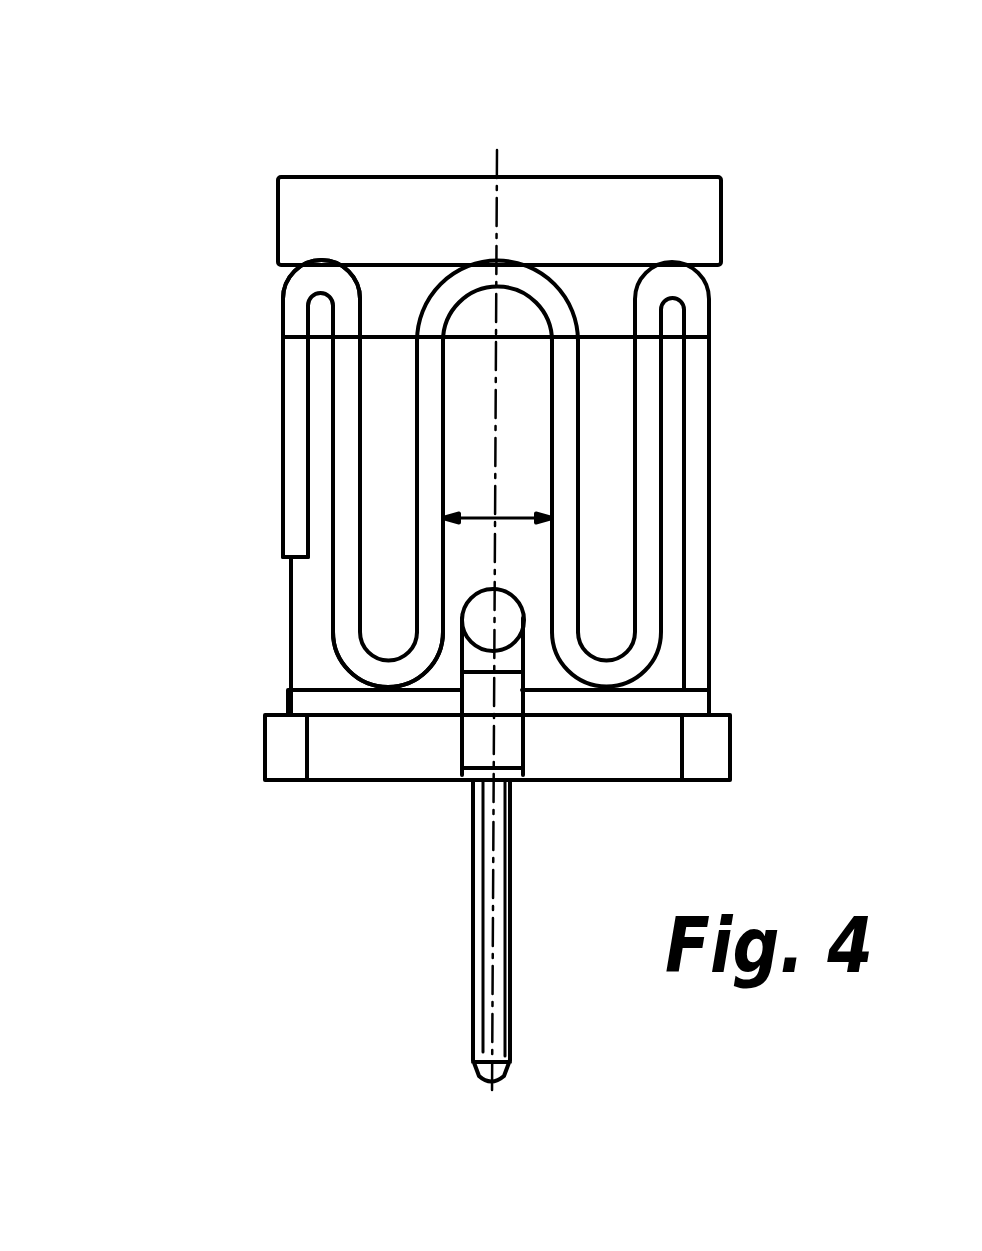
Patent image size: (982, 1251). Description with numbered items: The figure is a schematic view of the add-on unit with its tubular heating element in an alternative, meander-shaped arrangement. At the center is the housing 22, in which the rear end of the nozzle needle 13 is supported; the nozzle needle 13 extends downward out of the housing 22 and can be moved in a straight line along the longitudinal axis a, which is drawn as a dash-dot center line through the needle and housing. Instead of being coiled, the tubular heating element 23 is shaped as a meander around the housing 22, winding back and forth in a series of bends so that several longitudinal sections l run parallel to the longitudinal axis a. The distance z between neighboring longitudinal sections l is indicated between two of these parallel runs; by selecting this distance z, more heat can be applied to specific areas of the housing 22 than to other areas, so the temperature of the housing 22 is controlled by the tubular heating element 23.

The housing 22 is at (277, 600).
The tubular heating element 23 is at (448, 285).
The longitudinal sections l is at (423, 392).
The distance z is at (477, 510).
The longitudinal axis a is at (494, 173).
The nozzle needle 13 is at (487, 968).